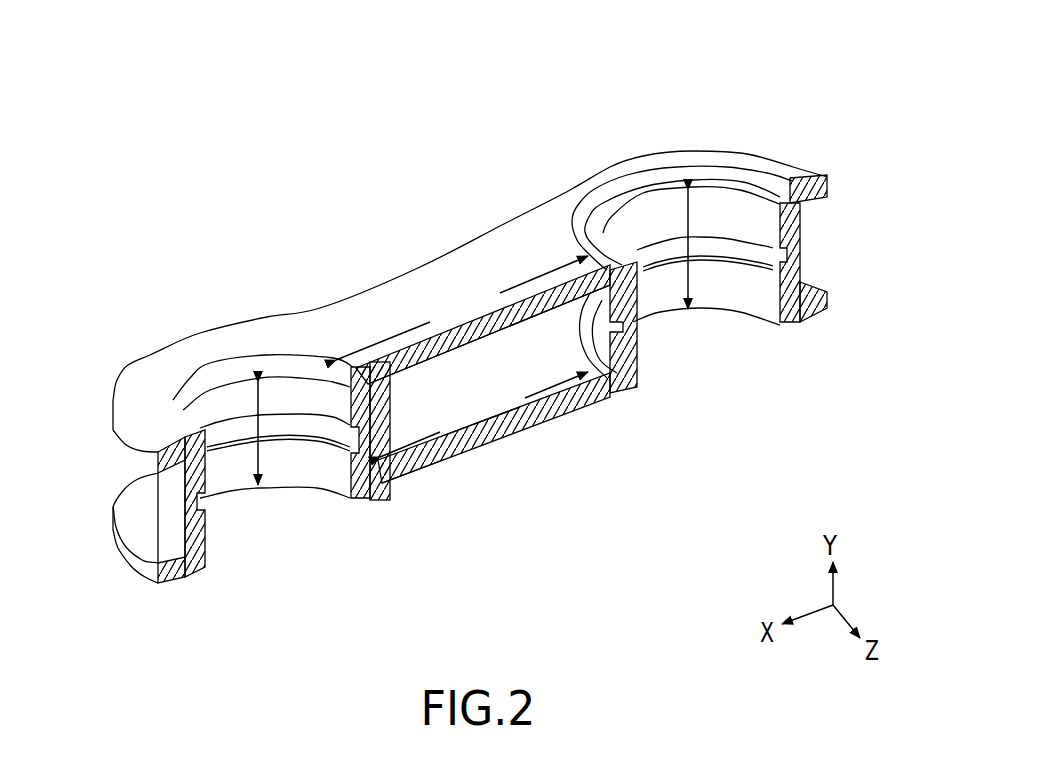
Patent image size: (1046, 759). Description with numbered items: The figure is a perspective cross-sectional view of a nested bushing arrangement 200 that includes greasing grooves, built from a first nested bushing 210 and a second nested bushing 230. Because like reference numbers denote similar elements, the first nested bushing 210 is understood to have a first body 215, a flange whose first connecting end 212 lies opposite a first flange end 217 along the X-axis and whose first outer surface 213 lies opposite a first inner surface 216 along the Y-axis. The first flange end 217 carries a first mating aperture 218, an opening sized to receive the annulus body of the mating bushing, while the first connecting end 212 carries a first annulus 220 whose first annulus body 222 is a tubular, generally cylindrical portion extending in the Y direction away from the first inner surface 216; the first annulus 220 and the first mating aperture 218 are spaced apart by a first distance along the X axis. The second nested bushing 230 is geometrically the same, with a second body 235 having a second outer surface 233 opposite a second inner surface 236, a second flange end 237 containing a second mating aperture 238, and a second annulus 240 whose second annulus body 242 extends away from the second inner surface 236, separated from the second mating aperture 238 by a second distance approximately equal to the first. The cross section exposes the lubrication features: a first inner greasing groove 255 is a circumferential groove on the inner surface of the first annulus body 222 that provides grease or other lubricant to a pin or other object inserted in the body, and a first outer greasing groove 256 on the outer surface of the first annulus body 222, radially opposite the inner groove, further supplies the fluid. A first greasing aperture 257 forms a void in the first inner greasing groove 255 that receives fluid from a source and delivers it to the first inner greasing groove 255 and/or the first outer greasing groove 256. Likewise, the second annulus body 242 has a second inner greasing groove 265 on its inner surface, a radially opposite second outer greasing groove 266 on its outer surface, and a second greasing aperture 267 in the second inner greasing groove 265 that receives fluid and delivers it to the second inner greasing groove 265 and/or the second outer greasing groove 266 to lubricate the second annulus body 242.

The bracket assembly 200 is at (272, 93).
The first nested bushing 210 is at (420, 232).
The first end portion 212 is at (150, 360).
The upper connecting bar 213 is at (400, 290).
The top surface 215 is at (498, 243).
The side surface of upper bar 216 is at (352, 290).
The second end portion 217 is at (695, 155).
The top surface of second end 218 is at (745, 172).
The first opening 220 is at (197, 410).
The first annulus body 222 is at (157, 512).
The second nested bushing 230 is at (645, 462).
The lower bar end portion 233 is at (437, 470).
The lower connecting bar 235 is at (530, 423).
The lower bar surface 236 is at (467, 430).
The first collar bottom flange 237 is at (140, 570).
The flange inner edge 238 is at (147, 530).
The second opening 240 is at (733, 307).
The second annulus body 242 is at (790, 205).
The first inner greasing groove 255 is at (280, 430).
The first outer greasing groove 256 is at (157, 472).
The first greasing aperture 257 is at (203, 437).
The second inner greasing groove 265 is at (760, 253).
The second outer greasing groove 266 is at (630, 350).
The second greasing aperture 267 is at (790, 258).